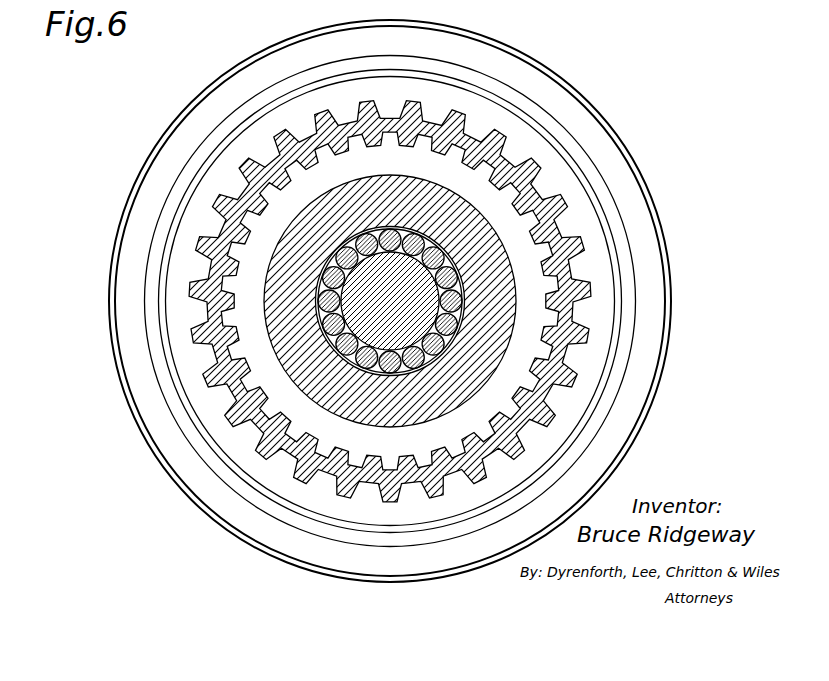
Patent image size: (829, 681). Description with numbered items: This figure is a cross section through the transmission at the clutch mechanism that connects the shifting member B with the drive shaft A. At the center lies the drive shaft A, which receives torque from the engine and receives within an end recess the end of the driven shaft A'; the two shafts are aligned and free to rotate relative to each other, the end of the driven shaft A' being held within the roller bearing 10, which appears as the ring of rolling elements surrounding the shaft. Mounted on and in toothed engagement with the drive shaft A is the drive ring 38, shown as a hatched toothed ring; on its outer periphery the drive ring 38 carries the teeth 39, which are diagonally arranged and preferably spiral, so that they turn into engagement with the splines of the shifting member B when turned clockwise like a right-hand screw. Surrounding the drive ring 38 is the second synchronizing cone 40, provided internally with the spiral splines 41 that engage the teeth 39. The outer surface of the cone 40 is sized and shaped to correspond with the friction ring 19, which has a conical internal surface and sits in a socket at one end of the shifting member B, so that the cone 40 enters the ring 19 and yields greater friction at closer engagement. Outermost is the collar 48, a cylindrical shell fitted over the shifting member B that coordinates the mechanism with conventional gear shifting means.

The collar 48 is at (583, 131).
The shifting member B is at (592, 178).
The friction ring 19 is at (593, 203).
The second synchronizing cone 40 is at (455, 301).
The spiral splines 41 is at (455, 301).
The teeth 39 is at (453, 301).
The drive ring 38 is at (523, 393).
The roller bearing 10 is at (415, 230).
The drive shaft A is at (280, 301).
The driven shaft A' is at (242, 326).